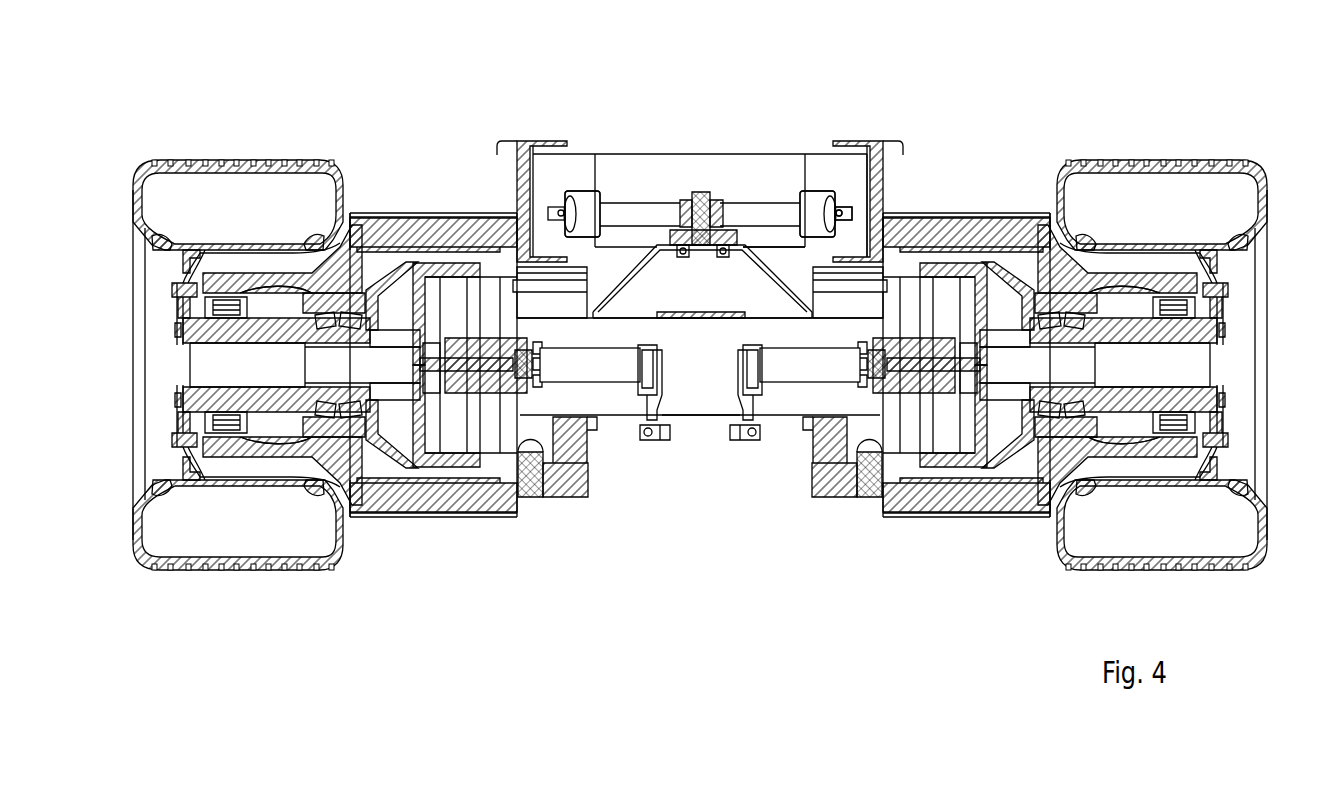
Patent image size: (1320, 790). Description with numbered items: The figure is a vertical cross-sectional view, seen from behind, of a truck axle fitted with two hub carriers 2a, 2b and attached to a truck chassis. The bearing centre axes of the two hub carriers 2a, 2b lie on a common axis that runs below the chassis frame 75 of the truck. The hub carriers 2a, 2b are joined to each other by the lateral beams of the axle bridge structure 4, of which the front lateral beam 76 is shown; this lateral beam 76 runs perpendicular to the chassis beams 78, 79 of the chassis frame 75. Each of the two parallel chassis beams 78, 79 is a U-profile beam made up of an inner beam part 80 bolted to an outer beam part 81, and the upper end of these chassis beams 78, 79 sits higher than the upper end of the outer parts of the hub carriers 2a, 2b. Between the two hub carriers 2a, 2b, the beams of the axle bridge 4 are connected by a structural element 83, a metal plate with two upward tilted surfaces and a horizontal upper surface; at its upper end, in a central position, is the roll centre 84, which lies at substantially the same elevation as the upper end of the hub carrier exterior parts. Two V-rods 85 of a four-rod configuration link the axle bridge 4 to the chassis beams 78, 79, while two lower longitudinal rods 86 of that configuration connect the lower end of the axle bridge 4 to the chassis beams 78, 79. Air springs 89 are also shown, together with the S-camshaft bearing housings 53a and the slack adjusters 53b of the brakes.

The hub carrier 2a is at (383, 508).
The hub carrier 2b is at (950, 508).
The axle bridge structure 4 is at (693, 392).
The S-camshaft bearing housing 53a is at (600, 363).
The slack adjuster 53b is at (650, 397).
The chassis frame 75 is at (532, 188).
The front lateral beam 76 is at (712, 395).
The chassis beam 78 is at (695, 154).
The chassis beam 79 is at (787, 278).
The inner beam part 80 is at (868, 190).
The outer beam part 81 is at (907, 140).
The structural element 83 is at (769, 273).
The roll centre 84 is at (685, 212).
The V-rods 85 is at (635, 212).
The lower longitudinal rod 86 is at (561, 475).
The air spring 89 is at (550, 297).